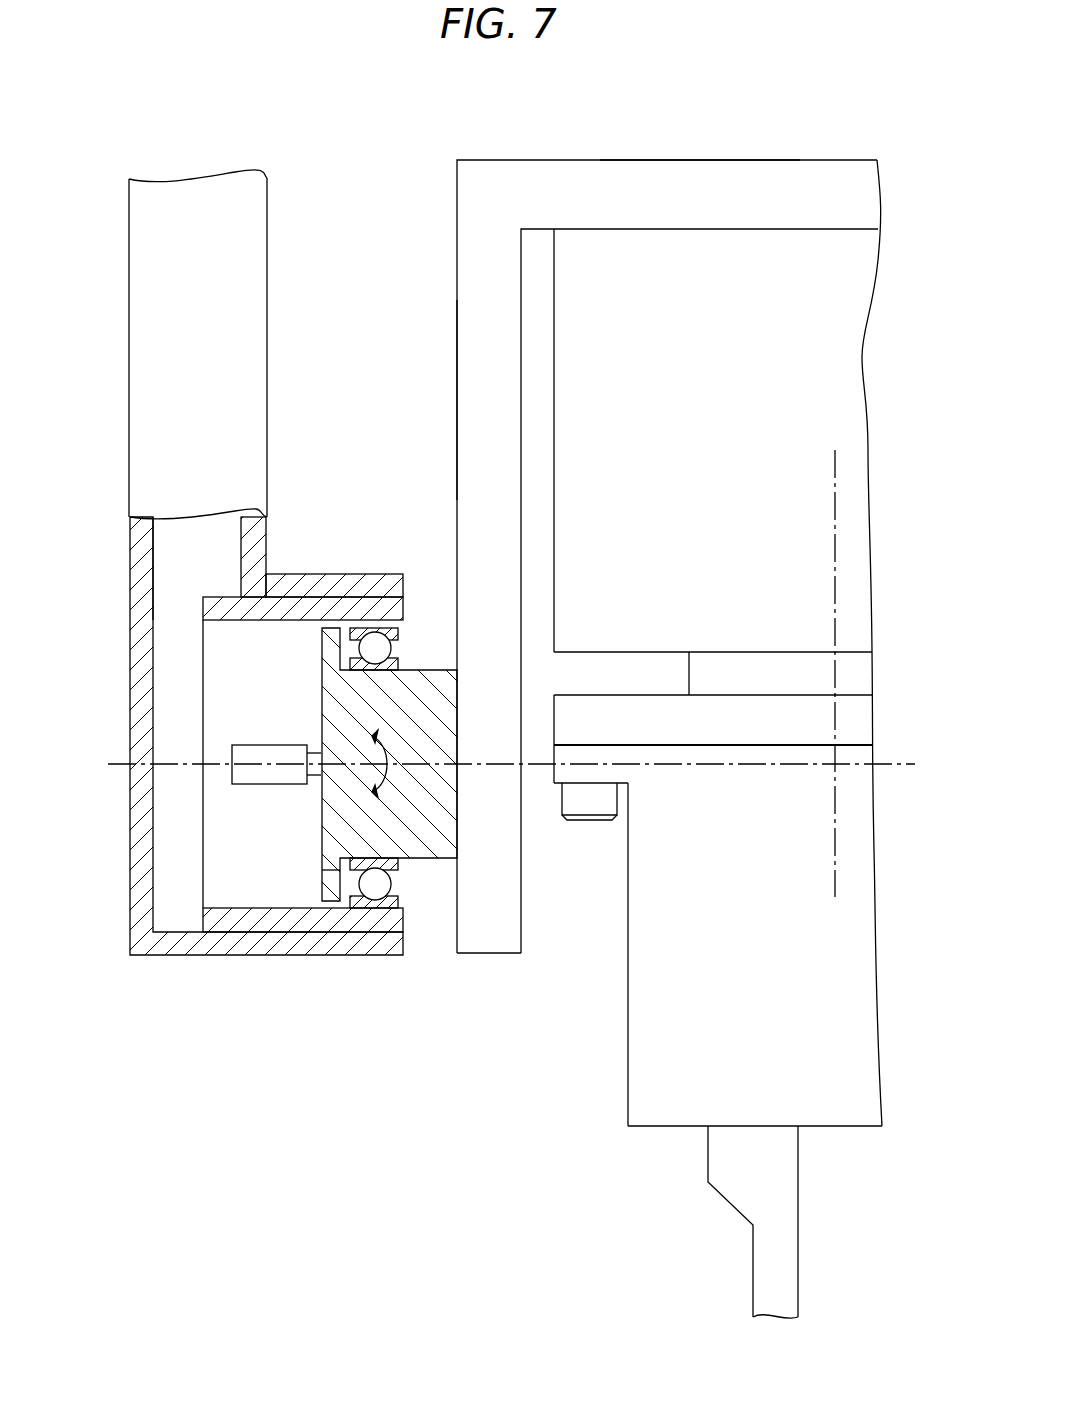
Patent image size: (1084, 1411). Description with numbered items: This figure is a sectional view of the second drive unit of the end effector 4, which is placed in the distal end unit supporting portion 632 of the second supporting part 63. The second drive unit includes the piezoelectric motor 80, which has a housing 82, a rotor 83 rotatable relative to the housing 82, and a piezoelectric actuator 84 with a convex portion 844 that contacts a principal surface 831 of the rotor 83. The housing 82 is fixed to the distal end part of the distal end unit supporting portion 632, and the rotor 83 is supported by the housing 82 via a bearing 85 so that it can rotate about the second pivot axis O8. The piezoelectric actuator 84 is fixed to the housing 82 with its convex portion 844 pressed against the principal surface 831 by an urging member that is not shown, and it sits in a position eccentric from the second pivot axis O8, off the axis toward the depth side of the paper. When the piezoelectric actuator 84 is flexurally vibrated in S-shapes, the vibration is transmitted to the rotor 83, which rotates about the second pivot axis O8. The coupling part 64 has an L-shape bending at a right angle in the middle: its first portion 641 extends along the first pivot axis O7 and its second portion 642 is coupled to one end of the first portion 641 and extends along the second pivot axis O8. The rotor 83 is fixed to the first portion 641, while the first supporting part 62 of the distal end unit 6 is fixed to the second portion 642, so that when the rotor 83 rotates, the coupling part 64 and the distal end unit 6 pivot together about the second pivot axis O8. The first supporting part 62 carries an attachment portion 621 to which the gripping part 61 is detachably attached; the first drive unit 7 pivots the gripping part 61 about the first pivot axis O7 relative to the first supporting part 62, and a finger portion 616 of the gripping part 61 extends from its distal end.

The end effector 4 is at (308, 157).
The distal end unit 6 is at (751, 739).
The first drive unit 7 is at (810, 594).
The gripping part 61 is at (853, 950).
The first supporting part 62 is at (853, 423).
The second supporting part 63 is at (128, 280).
The coupling part 64 is at (559, 158).
The housing 82 is at (300, 605).
The rotor 83 is at (430, 847).
The piezoelectric actuator 84 is at (250, 778).
The bearing 85 is at (393, 907).
The piezoelectric motor 80 is at (185, 662).
The finger portion 616 is at (773, 1271).
The attachment portion 621 is at (853, 718).
The distal end unit supporting portion 632 is at (152, 378).
The first portion 641 is at (483, 358).
The second portion 642 is at (733, 183).
The principal surface 831 is at (300, 872).
The convex portion 844 is at (318, 752).
The second pivot axis O8 is at (484, 779).
The first pivot axis O7 is at (835, 866).